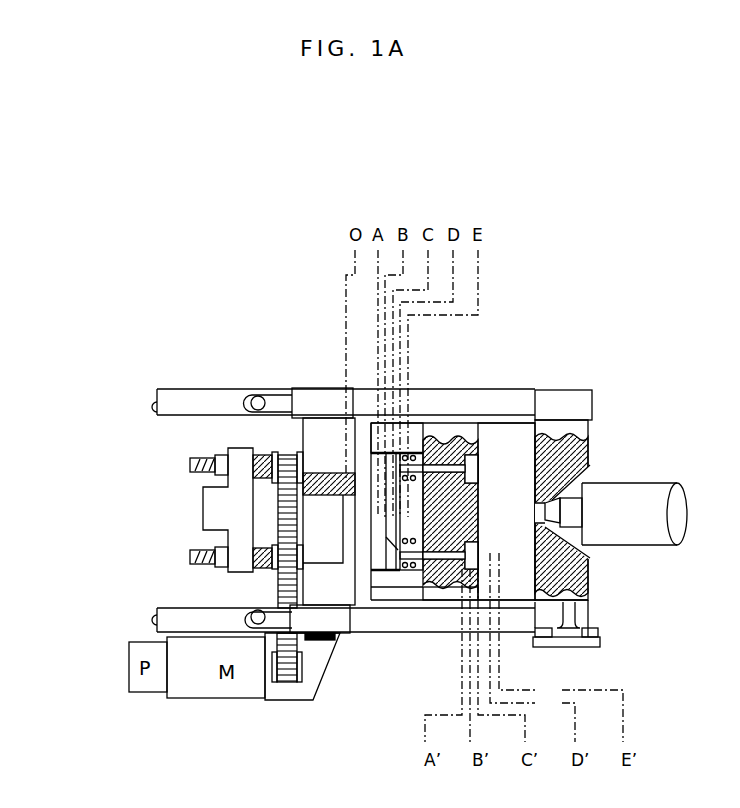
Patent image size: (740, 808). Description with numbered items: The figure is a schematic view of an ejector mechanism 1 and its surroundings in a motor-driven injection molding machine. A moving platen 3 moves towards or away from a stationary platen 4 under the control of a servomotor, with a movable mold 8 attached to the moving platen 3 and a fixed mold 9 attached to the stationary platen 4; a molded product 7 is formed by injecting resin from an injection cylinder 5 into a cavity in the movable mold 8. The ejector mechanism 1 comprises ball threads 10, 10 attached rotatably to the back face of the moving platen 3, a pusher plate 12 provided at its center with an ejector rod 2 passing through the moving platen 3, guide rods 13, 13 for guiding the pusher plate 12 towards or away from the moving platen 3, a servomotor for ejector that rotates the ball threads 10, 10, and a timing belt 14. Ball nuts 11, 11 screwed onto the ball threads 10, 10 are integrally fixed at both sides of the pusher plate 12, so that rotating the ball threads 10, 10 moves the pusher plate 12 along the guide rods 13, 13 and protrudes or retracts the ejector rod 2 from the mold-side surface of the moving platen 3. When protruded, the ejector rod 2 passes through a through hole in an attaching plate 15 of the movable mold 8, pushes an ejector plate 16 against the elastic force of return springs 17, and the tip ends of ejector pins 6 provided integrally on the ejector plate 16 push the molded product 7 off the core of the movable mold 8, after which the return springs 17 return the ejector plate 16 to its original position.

The ejector mechanism 1 is at (145, 500).
The ejector rod 2 is at (318, 480).
The moving platen 3 is at (343, 376).
The stationary platen 4 is at (557, 390).
The injection cylinder 5 is at (630, 483).
The ejector pin 6 is at (440, 550).
The molded product 7 is at (475, 552).
The movable mold 8 is at (402, 613).
The fixed mold 9 is at (503, 615).
The ball thread 10 is at (190, 465).
The ball nut 11 is at (240, 448).
The pusher plate 12 is at (202, 507).
The guide rod 13 is at (247, 458).
The timing belt 14 is at (287, 667).
The attaching plate 15 is at (358, 450).
The ejector plate 16 is at (404, 572).
The return spring 17 is at (421, 448).